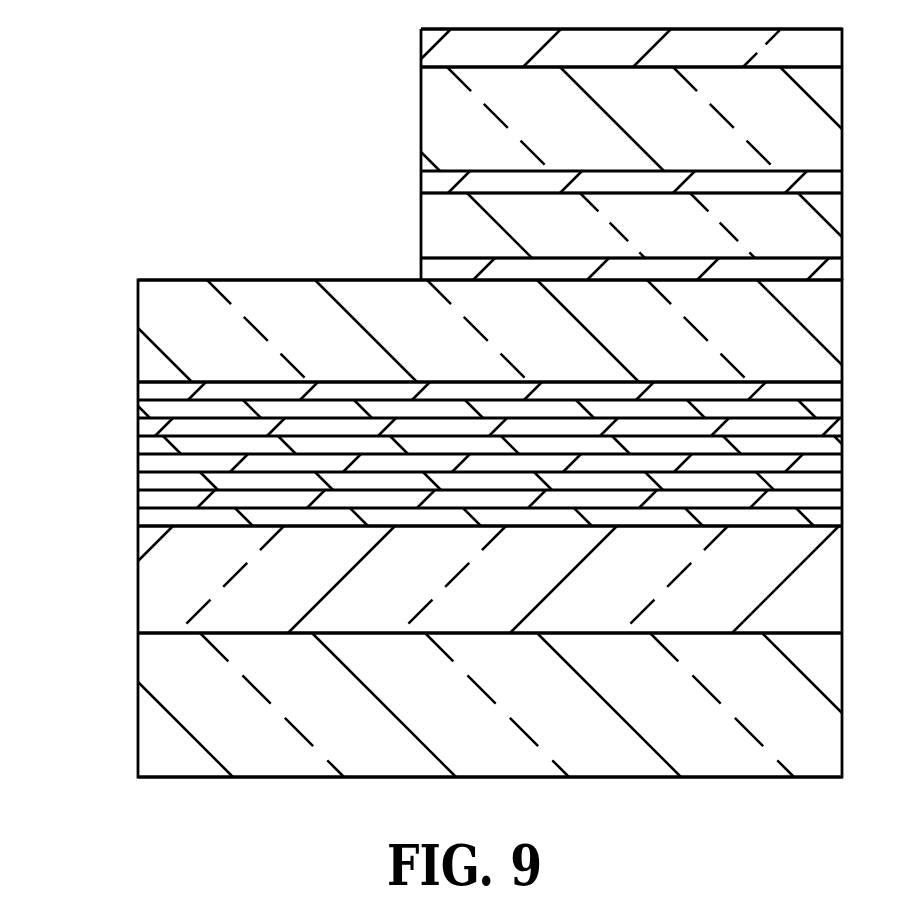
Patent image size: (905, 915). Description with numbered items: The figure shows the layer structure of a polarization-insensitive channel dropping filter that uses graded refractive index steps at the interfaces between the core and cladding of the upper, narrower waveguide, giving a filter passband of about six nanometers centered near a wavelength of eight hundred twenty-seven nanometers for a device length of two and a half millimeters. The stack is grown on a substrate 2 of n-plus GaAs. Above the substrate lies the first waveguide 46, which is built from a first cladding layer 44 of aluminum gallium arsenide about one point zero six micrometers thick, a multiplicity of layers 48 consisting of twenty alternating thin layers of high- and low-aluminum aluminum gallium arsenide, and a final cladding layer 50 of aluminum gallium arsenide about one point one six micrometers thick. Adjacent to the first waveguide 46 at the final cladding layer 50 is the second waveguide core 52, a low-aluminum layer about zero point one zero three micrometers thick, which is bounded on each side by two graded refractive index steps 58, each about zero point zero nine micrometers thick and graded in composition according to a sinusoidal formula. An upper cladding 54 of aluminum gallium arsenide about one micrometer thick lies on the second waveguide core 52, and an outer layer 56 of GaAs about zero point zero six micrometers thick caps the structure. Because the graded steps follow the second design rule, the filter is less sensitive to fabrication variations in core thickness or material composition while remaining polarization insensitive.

The substrate 2 is at (800, 735).
The first cladding layer 44 is at (94, 526).
The first waveguide 46 is at (63, 255).
The multiplicity of layers 48 is at (129, 427).
The final cladding layer 50 is at (93, 280).
The second waveguide core 52 is at (340, 280).
The upper cladding 54 is at (413, 171).
The outer layer 56 is at (413, 67).
The graded refractive index steps 58 is at (432, 268).